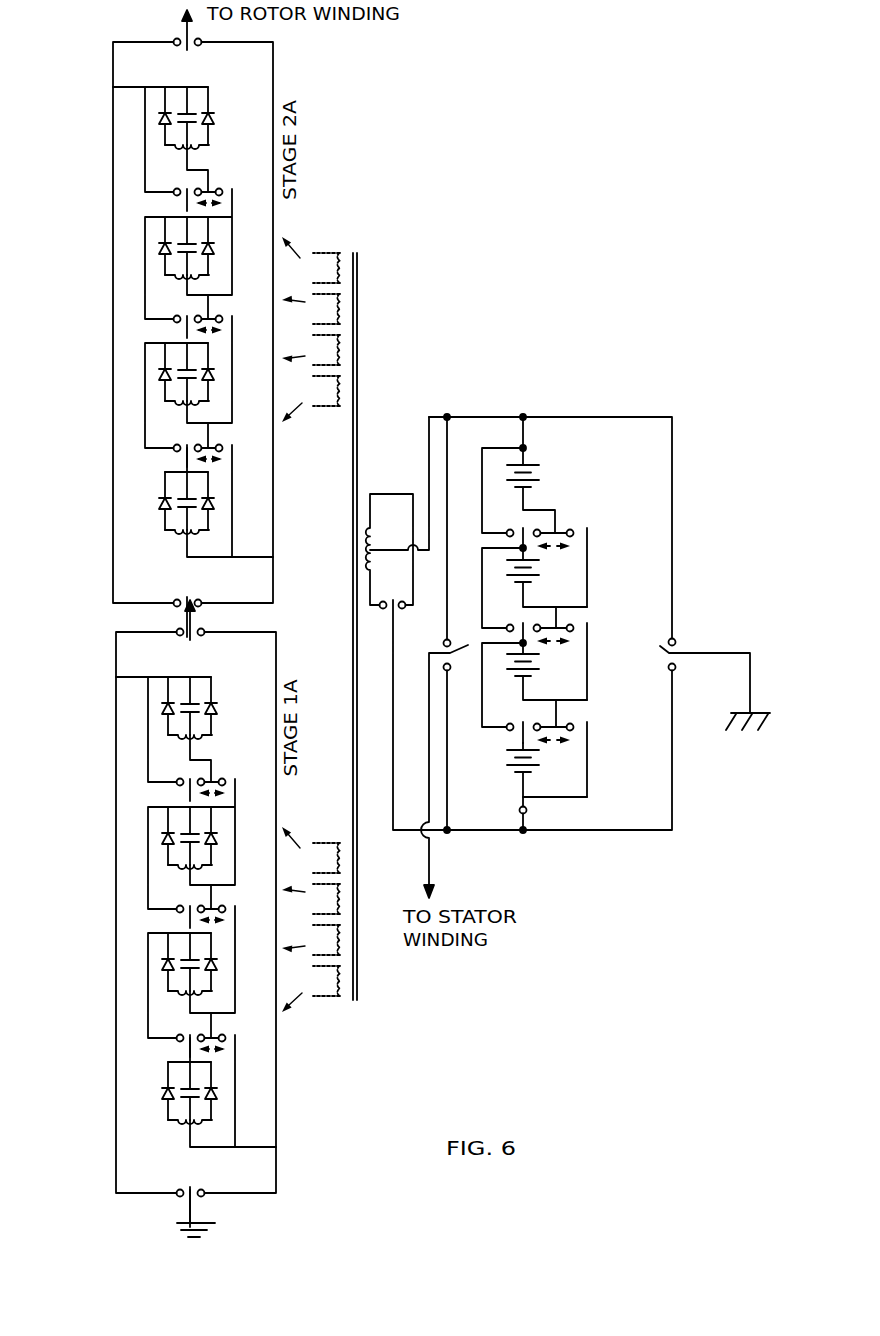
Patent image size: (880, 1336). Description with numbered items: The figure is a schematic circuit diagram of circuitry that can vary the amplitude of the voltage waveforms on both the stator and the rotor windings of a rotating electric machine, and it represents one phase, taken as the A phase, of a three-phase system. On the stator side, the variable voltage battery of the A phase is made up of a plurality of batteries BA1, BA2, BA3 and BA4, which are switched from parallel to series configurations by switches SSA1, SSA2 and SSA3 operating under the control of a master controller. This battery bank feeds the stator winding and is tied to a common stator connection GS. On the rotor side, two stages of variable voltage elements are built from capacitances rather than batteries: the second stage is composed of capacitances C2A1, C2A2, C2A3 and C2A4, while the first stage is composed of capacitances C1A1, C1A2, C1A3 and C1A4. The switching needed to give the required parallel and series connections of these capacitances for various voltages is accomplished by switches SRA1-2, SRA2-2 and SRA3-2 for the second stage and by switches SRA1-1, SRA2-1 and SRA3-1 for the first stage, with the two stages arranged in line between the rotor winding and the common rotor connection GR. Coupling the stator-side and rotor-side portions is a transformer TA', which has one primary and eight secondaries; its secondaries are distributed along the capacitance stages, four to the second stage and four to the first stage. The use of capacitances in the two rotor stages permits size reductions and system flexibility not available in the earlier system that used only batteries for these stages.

The capacitance C2A4 is at (202, 124).
The capacitance C2A3 is at (203, 252).
The capacitance C2A2 is at (203, 378).
The capacitance C2A1 is at (203, 505).
The capacitance C1A4 is at (205, 714).
The capacitance C1A3 is at (205, 836).
The capacitance C1A2 is at (205, 965).
The capacitance C1A1 is at (205, 1098).
The switch SRA3-2 is at (139, 191).
The switch SRA2-2 is at (139, 320).
The switch SRA1-2 is at (139, 450).
The switch SRA3-1 is at (142, 783).
The switch SRA2-1 is at (142, 910).
The switch SRA1-1 is at (142, 1040).
The transformer TA' is at (371, 626).
The battery BA1 is at (542, 466).
The battery BA2 is at (540, 576).
The battery BA3 is at (533, 670).
The battery BA4 is at (533, 767).
The switch SSA1 is at (591, 530).
The switch SSA2 is at (591, 625).
The switch SSA3 is at (591, 719).
The common stator connection GS is at (756, 731).
The common rotor connection GR is at (213, 1233).